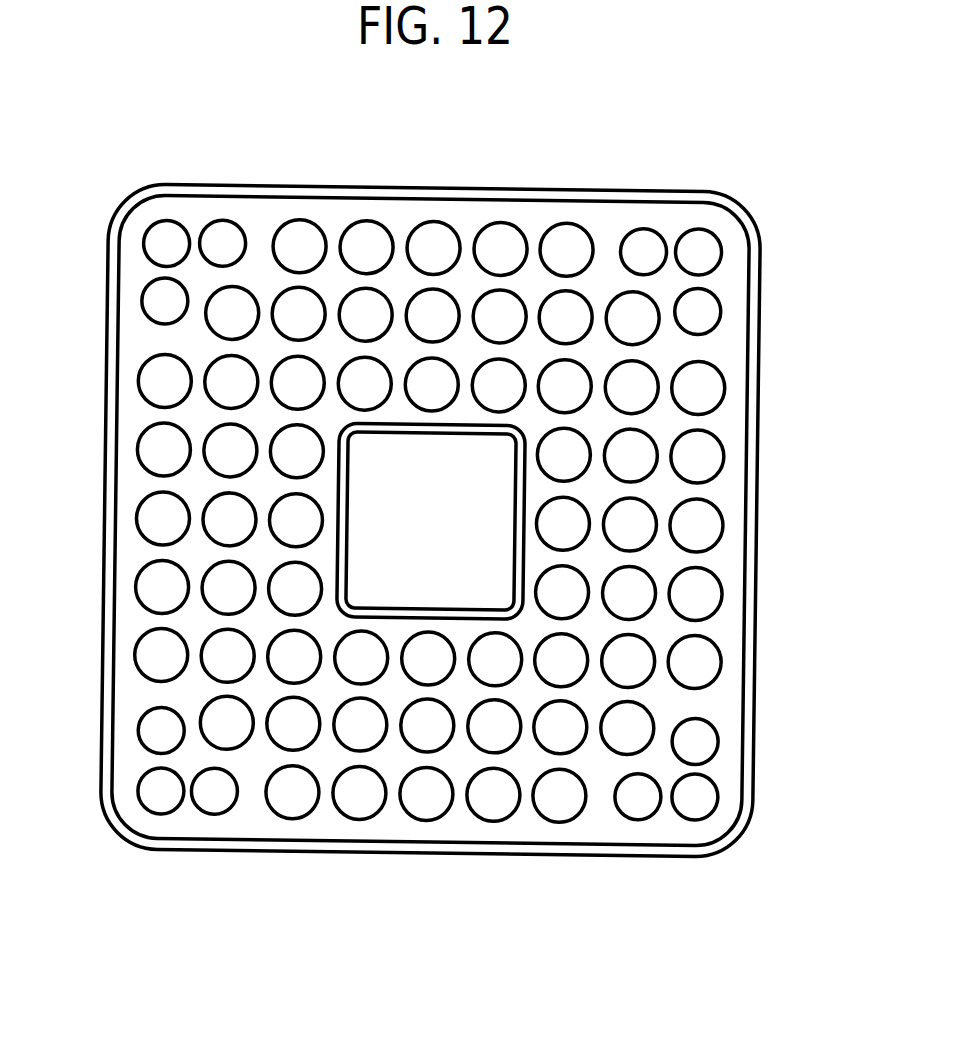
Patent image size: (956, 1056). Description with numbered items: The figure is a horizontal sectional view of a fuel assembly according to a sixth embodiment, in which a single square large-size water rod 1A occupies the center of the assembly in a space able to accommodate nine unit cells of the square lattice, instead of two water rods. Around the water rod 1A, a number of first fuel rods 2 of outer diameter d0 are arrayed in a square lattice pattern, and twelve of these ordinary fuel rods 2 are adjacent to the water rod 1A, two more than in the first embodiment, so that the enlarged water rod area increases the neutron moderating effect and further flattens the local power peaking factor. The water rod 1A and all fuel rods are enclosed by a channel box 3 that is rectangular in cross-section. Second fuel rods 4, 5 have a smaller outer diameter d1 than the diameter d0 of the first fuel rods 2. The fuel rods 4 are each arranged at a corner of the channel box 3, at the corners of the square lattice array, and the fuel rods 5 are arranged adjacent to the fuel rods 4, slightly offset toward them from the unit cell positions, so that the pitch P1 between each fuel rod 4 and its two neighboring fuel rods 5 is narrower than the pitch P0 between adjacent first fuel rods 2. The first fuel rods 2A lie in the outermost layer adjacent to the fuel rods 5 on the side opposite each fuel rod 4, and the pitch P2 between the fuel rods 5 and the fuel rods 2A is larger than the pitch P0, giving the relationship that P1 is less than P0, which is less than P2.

The large-size water rod 1A is at (483, 475).
The first fuel rods 2 is at (705, 598).
The first fuel rods in outermost layer 2A is at (155, 652).
The channel box 3 is at (752, 755).
The second fuel rods at corners 4 is at (710, 247).
The second fuel rods adjacent to corner rods 5 is at (643, 240).
The outer diameter of second fuel rods d1 is at (128, 282).
The outer diameter of first fuel rods d0 is at (257, 287).
The pitch between fuel rod 4 and fuel rods 5 P1 is at (161, 788).
The pitch between adjacent first fuel rods P0 is at (228, 722).
The pitch between fuel rods 5 and first fuel rods 2A P2 is at (283, 927).